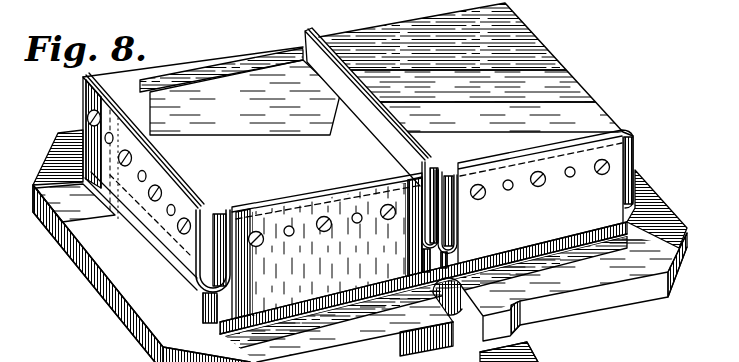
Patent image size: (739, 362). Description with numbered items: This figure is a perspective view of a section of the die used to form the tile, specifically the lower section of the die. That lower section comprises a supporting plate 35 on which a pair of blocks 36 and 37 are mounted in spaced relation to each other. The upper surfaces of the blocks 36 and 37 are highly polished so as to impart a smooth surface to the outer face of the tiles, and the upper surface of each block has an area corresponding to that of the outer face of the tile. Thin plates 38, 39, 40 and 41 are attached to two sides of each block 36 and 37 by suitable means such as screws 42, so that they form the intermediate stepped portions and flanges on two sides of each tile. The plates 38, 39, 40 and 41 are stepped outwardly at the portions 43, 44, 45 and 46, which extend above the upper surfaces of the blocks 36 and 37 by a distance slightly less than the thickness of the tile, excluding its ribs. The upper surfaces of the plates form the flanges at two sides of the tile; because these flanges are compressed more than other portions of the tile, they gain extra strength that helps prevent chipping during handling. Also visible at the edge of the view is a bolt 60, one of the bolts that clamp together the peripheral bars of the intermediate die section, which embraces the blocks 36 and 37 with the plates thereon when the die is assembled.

The supporting plate 35 is at (100, 260).
The block 36 is at (211, 57).
The block 37 is at (362, 35).
The thin plate 38 is at (147, 150).
The thin plate 39 is at (290, 201).
The thin plate 40 is at (383, 110).
The thin plate 41 is at (513, 156).
The screws 42 is at (156, 200).
The outwardly stepped portion 43 is at (199, 213).
The outwardly stepped portion 44 is at (237, 210).
The outwardly stepped portion 45 is at (429, 165).
The outwardly stepped portion 46 is at (450, 172).
The bolt 60 is at (560, 361).